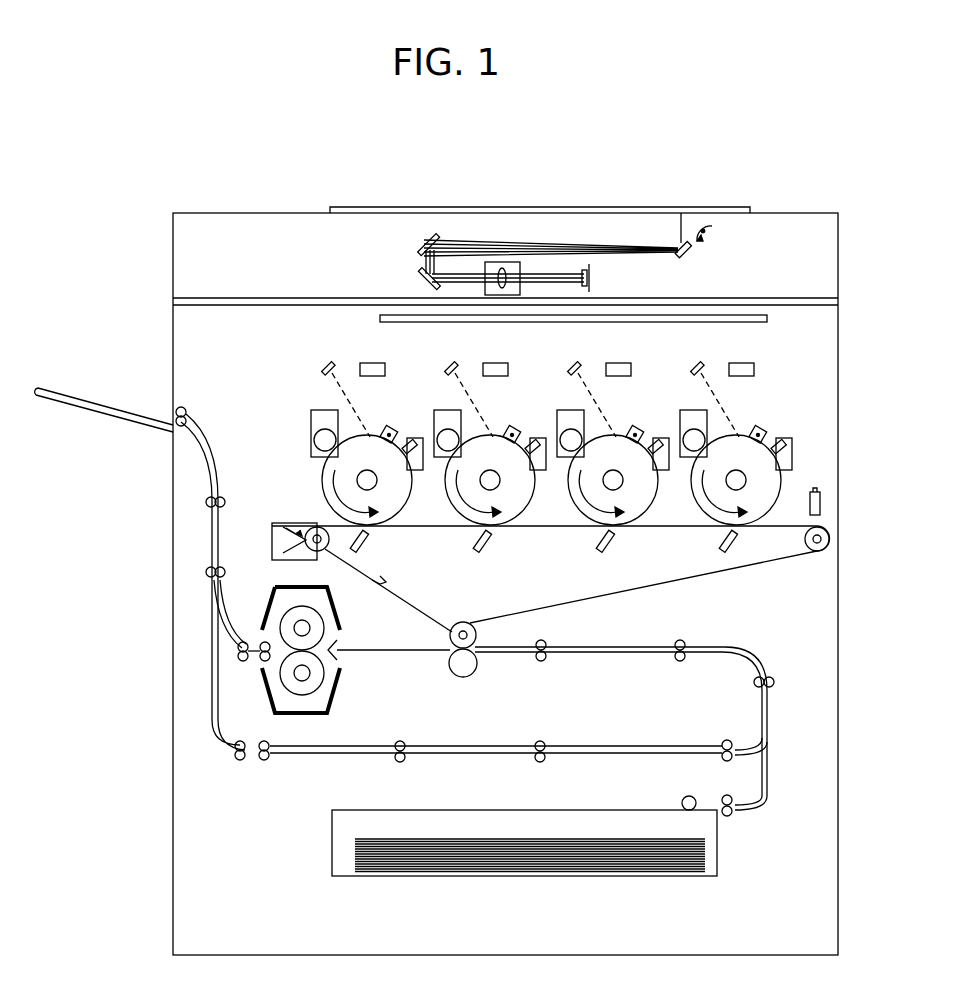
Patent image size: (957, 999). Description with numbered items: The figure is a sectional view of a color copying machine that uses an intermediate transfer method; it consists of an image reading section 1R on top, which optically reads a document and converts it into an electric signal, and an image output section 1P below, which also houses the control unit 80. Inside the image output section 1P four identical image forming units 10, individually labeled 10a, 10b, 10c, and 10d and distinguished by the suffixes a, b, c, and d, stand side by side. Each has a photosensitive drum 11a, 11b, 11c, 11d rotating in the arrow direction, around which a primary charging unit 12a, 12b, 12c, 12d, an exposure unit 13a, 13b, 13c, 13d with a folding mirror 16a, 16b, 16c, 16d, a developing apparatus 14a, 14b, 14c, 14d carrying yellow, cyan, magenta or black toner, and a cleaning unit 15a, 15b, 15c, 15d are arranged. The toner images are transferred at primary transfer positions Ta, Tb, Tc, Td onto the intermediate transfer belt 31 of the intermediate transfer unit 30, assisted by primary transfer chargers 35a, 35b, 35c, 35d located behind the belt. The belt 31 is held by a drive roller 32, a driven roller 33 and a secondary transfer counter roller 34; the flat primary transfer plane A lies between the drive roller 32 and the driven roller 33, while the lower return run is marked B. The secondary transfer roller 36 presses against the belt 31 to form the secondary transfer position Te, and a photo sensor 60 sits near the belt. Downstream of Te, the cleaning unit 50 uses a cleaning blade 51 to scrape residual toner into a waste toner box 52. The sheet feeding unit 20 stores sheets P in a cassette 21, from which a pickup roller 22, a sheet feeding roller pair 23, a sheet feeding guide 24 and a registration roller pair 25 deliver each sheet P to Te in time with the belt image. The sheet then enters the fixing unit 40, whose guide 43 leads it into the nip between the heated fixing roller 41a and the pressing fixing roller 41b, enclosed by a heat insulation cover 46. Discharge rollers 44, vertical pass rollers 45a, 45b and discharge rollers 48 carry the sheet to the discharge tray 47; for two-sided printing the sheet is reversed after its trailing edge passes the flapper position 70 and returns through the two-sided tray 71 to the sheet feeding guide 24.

The image reading section 1R is at (838, 257).
The image output section 1P is at (838, 430).
The control unit 80 is at (395, 317).
The image forming units 10 is at (793, 391).
The image forming unit 10a is at (803, 373).
The image forming unit 10b is at (678, 373).
The image forming unit 10c is at (553, 373).
The image forming unit 10d is at (431, 371).
The photosensitive drum 11a is at (711, 504).
The photosensitive drum 11b is at (589, 504).
The photosensitive drum 11c is at (466, 504).
The photosensitive drum 11d is at (322, 478).
The primary charging unit 12a is at (748, 433).
The primary charging unit 12b is at (625, 433).
The primary charging unit 12c is at (502, 433).
The primary charging unit 12d is at (377, 430).
The exposure unit 13a is at (743, 363).
The exposure unit 13b is at (620, 363).
The exposure unit 13c is at (497, 363).
The exposure unit 13d is at (372, 363).
The developing apparatus 14a is at (696, 411).
The developing apparatus 14b is at (574, 411).
The developing apparatus 14c is at (451, 411).
The developing apparatus 14d is at (318, 418).
The cleaning unit 15a is at (781, 442).
The cleaning unit 15b is at (658, 442).
The cleaning unit 15c is at (535, 442).
The cleaning unit 15d is at (412, 439).
The folding mirror 16a is at (700, 364).
The folding mirror 16b is at (580, 366).
The folding mirror 16c is at (455, 366).
The folding mirror 16d is at (324, 370).
The laser beam a is at (716, 377).
The laser beam b is at (592, 379).
The laser beam c is at (469, 376).
The laser beam d is at (343, 370).
The primary transfer position Ta is at (741, 534).
The primary transfer position Tb is at (618, 534).
The primary transfer position Tc is at (495, 534).
The primary transfer position Td is at (372, 534).
The secondary transfer position Te is at (450, 666).
The primary transfer charger 35a is at (733, 548).
The primary transfer charger 35b is at (611, 548).
The primary transfer charger 35c is at (488, 548).
The primary transfer charger 35d is at (365, 548).
The primary transfer plane A is at (580, 540).
The belt return direction B is at (388, 590).
The intermediate transfer unit 30 is at (532, 560).
The intermediate transfer belt 31 is at (594, 605).
The drive roller 32 is at (820, 552).
The driven roller 33 is at (311, 528).
The secondary transfer counter roller 34 is at (464, 620).
The secondary transfer roller 36 is at (478, 672).
The cleaning unit 50 is at (272, 523).
The cleaning blade 51 is at (286, 554).
The waste toner box 52 is at (272, 532).
The photo sensor 60 is at (814, 488).
The sheet feeding unit 20 is at (561, 838).
The cassette 21 is at (613, 810).
The pickup roller 22 is at (684, 800).
The sheet feeding roller pair 23 is at (680, 662).
The sheet feeding guide 24 is at (608, 652).
The registration roller pair 25 is at (543, 662).
The sheet P is at (370, 844).
The fixing unit 40 is at (356, 667).
The fixing roller 41a is at (323, 626).
The fixing roller 41b is at (302, 714).
The guide 43 is at (374, 652).
The discharge rollers 44 is at (260, 660).
The fixing-unit heat insulation cover 46 is at (330, 602).
The vertical pass rollers 45a is at (222, 577).
The vertical pass rollers 45b is at (206, 498).
The discharge tray 47 is at (98, 378).
The discharge rollers 48 is at (183, 409).
The position 70 is at (215, 626).
The two-sided tray 71 is at (466, 752).